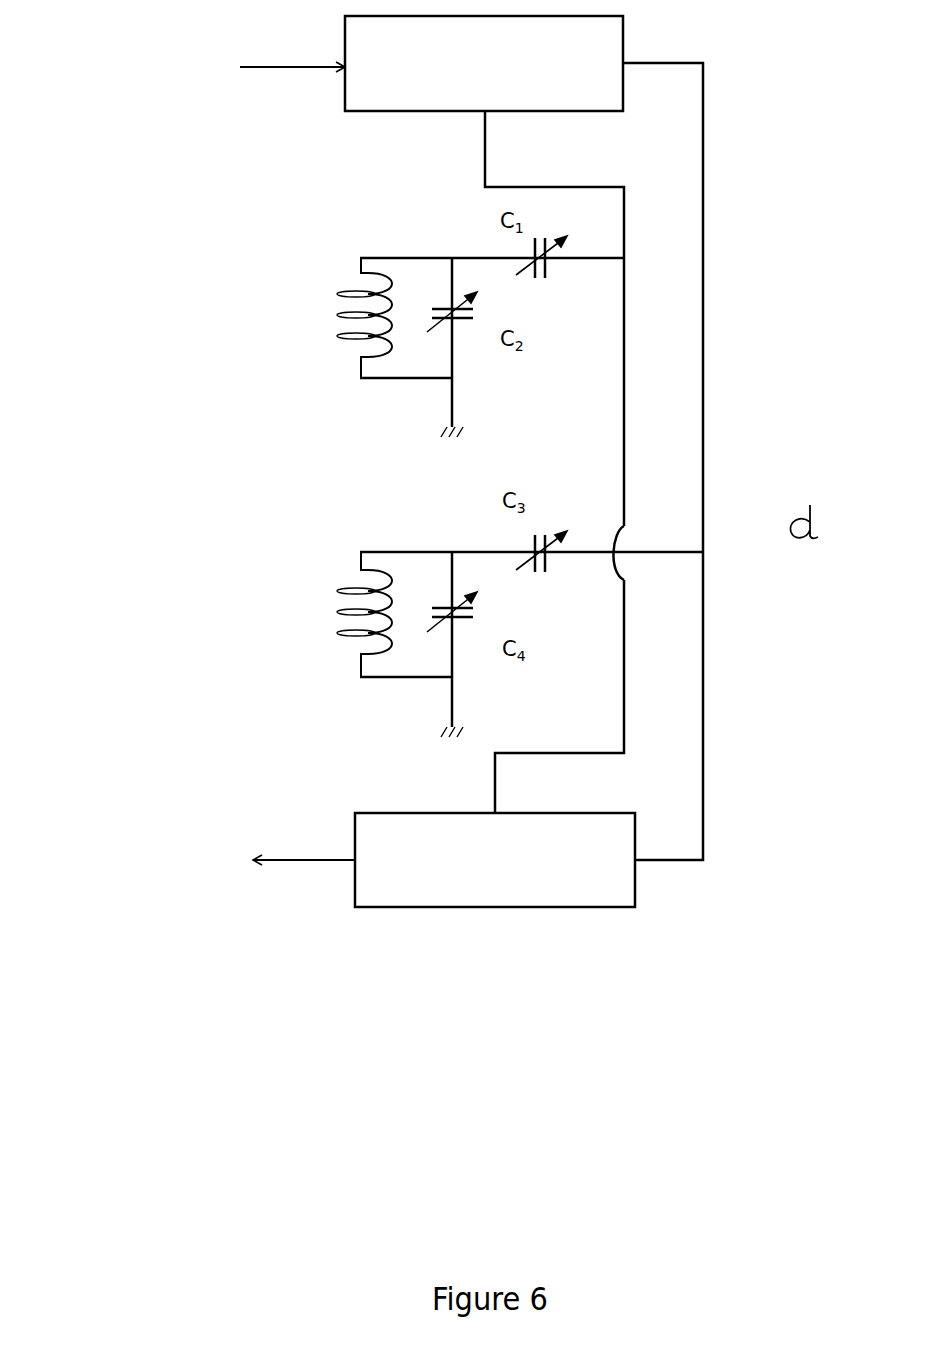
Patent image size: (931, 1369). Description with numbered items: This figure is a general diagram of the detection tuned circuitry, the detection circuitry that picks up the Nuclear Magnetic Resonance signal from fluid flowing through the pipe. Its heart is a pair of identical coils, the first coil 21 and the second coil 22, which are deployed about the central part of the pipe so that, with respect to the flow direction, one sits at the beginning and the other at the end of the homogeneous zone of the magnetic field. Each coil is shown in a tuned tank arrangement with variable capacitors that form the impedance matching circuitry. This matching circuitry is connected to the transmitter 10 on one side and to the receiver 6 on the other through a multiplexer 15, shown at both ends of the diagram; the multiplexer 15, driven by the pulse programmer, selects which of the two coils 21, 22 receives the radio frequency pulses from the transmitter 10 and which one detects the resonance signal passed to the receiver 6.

The multiplexer 15 is at (383, 88).
The transmitter 10 is at (197, 83).
The receiver 6 is at (231, 884).
The first coil 21 is at (335, 338).
The second coil 22 is at (340, 635).